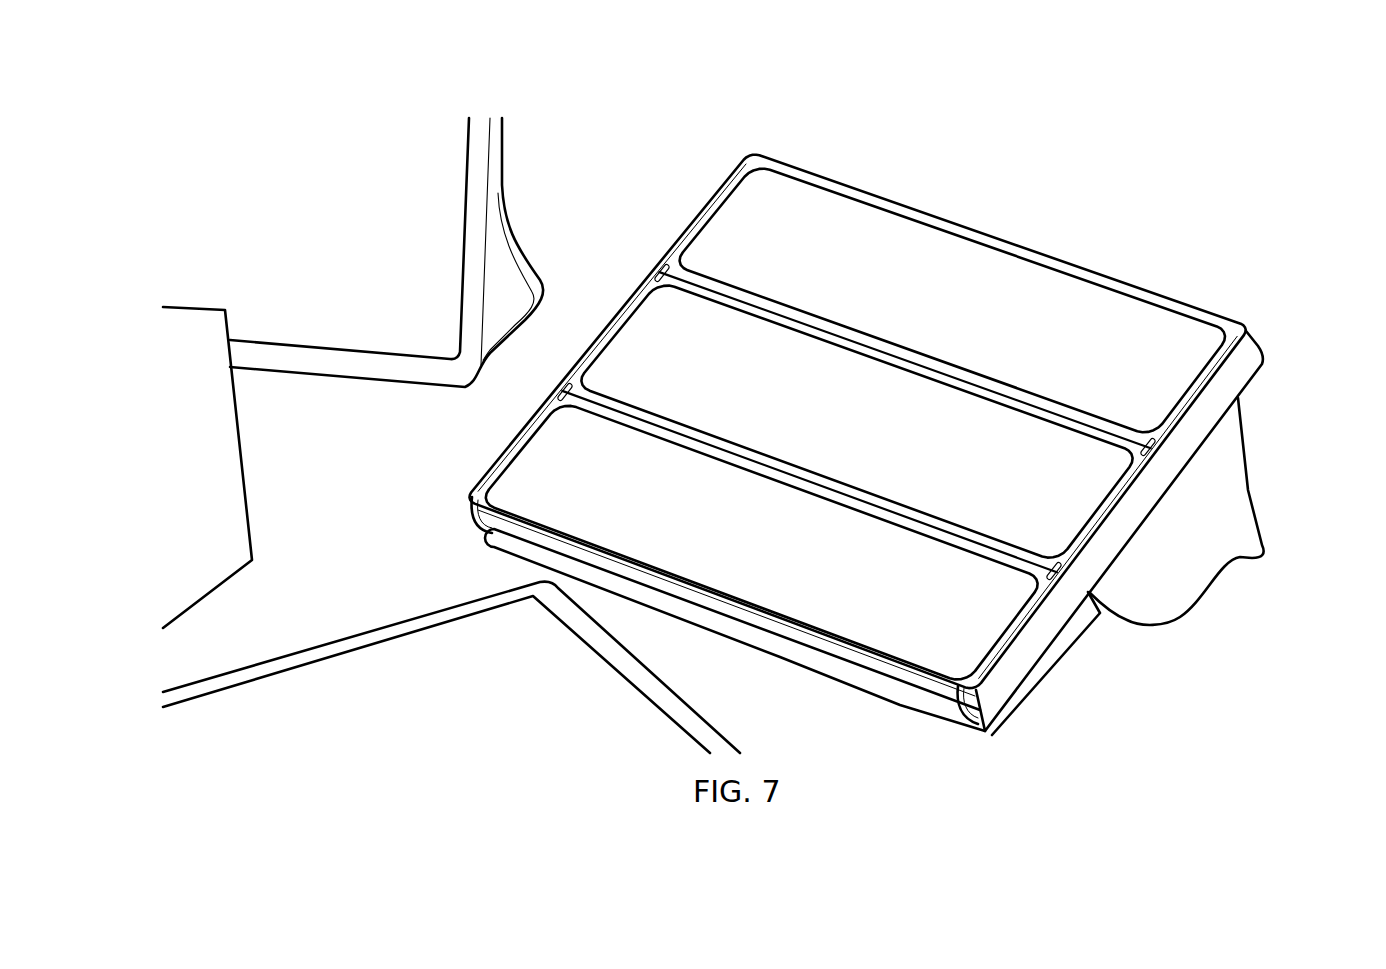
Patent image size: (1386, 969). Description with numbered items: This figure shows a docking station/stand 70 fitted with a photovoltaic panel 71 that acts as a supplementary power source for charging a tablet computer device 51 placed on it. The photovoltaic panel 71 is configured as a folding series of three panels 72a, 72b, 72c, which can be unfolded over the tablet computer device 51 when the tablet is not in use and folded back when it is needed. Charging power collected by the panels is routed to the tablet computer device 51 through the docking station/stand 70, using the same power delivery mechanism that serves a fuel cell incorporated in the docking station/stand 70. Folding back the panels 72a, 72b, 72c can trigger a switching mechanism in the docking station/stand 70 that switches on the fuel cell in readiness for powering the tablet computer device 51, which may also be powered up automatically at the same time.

The docking station/stand 70 is at (866, 429).
The photovoltaic panel 71 is at (700, 212).
The panel 72a is at (770, 254).
The panel 72b is at (690, 362).
The panel 72c is at (590, 476).
The tablet computer device 51 is at (1258, 352).